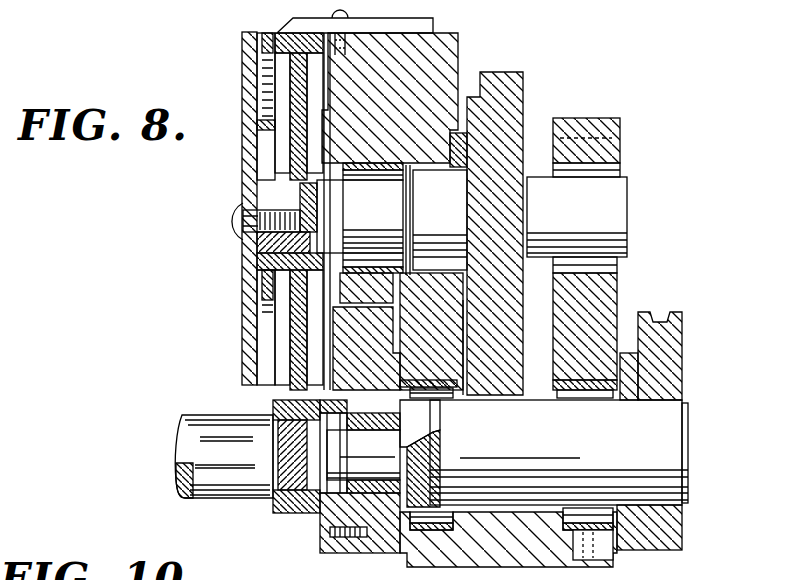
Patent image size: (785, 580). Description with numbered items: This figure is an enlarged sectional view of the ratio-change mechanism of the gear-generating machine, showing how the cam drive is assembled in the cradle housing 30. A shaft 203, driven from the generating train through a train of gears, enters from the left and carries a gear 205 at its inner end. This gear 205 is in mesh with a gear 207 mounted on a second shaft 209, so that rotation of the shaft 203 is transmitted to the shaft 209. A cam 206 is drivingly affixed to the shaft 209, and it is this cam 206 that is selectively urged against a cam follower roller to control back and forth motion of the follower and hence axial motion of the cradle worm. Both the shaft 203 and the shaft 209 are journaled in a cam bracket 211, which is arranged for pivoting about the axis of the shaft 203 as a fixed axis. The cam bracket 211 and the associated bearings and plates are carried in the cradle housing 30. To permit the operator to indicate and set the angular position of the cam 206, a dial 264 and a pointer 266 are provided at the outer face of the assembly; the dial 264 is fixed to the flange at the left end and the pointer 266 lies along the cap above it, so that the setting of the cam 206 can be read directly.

The cradle housing 30 is at (645, 548).
The shaft 203 is at (200, 442).
The gear 205 is at (287, 515).
The cam 206 is at (523, 76).
The gear 207 is at (270, 388).
The shaft 209 is at (243, 205).
The cam bracket 211 is at (458, 37).
The dial 264 is at (242, 33).
The pointer 266 is at (283, 18).